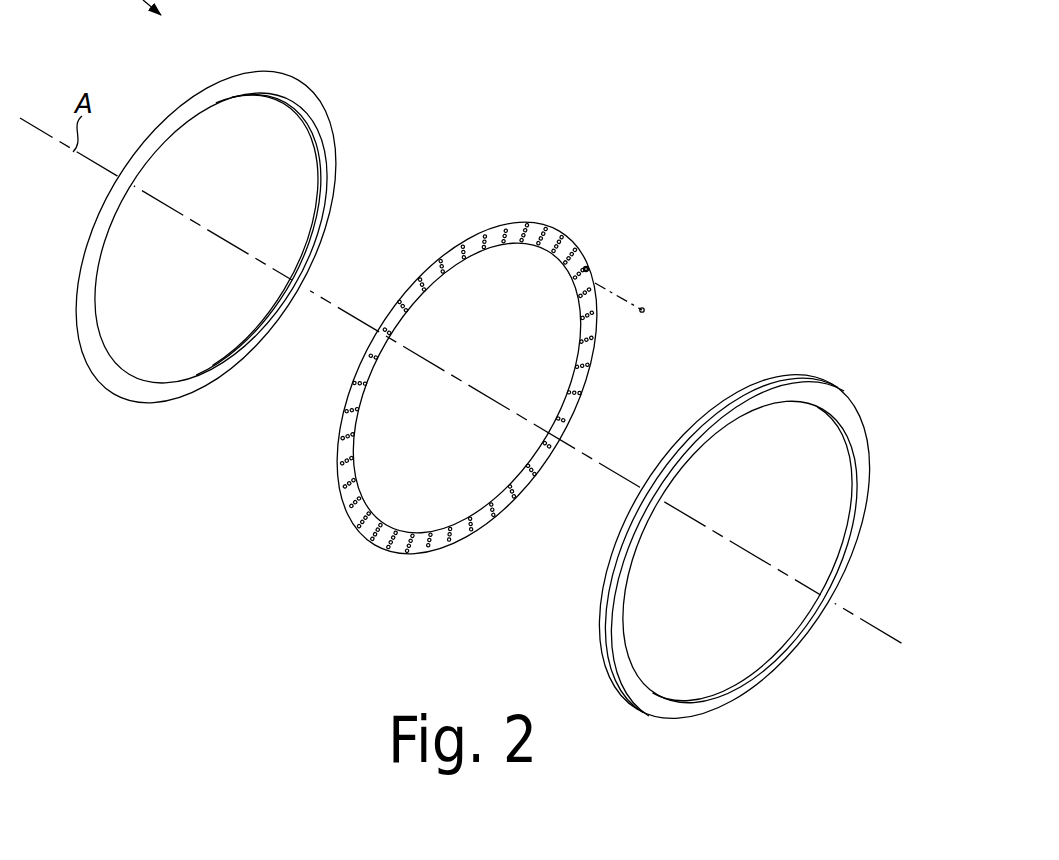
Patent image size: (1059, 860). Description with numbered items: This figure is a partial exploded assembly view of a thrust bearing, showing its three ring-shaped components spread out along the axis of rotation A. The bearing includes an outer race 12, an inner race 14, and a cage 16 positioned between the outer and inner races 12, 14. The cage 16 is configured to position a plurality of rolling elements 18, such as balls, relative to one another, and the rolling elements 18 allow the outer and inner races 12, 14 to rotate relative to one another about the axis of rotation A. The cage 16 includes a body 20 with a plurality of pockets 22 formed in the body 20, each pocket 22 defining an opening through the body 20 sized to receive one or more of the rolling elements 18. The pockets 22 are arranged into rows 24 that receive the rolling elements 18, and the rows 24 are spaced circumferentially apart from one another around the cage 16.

The outer race 12 is at (810, 372).
The inner race 14 is at (269, 68).
The cage 16 is at (542, 220).
The rolling elements 18 is at (659, 311).
The body 20 is at (475, 231).
The pockets 22 is at (586, 260).
The rows 24 is at (593, 267).